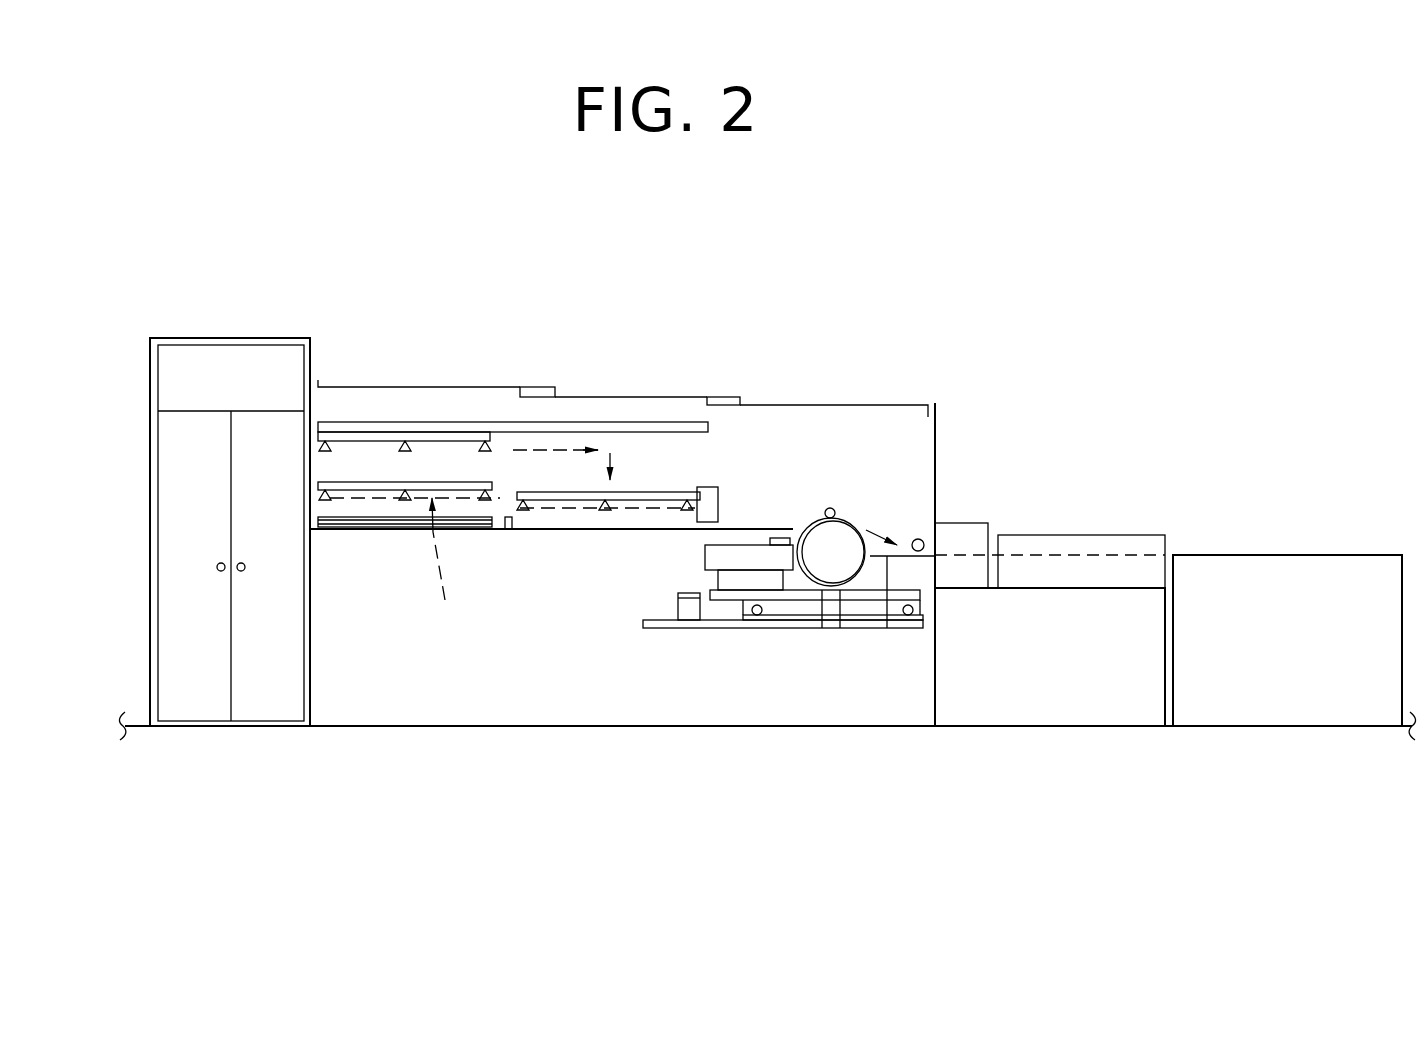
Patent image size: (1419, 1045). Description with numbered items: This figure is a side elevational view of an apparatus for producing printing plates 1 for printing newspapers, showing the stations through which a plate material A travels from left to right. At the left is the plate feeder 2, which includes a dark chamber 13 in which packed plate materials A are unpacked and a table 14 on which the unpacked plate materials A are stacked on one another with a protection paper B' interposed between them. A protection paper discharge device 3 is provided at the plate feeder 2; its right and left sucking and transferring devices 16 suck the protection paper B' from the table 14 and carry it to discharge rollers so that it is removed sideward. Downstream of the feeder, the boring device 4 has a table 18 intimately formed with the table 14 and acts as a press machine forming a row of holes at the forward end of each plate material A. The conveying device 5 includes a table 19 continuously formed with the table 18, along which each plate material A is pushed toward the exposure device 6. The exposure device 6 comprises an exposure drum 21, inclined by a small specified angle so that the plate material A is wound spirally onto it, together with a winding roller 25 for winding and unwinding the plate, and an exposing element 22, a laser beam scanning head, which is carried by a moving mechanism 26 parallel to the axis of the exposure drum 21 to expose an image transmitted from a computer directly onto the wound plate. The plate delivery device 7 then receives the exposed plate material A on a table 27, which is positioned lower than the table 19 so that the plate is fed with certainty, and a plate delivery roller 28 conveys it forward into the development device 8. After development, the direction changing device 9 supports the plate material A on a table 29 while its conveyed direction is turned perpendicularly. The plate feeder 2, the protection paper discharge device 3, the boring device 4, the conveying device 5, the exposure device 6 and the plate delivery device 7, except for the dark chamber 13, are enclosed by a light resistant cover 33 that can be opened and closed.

The printing plate 1 is at (1178, 335).
The plate feeder 2 is at (405, 420).
The protection paper discharge device 3 is at (353, 478).
The plate material A is at (455, 448).
The boring device 4 is at (705, 487).
The conveying device 5 is at (508, 532).
The exposure device 6 is at (860, 467).
The plate delivery device 7 is at (925, 525).
The development device 8 is at (1112, 693).
The direction changing device 9 is at (1314, 693).
The dark chamber 13 is at (197, 700).
The table 14 is at (345, 530).
The sucking and transferring device 16 is at (490, 481).
The table 18 is at (605, 530).
The table 19 is at (747, 528).
The exposure drum 21 is at (833, 570).
The exposing element 22 is at (730, 560).
The winding roller 25 is at (830, 507).
The moving mechanism 26 is at (772, 582).
The table 27 is at (887, 628).
The plate delivery roller 28 is at (918, 552).
The table 29 is at (1257, 555).
The light resistant cover 33 is at (912, 404).
The protection paper B' is at (446, 567).